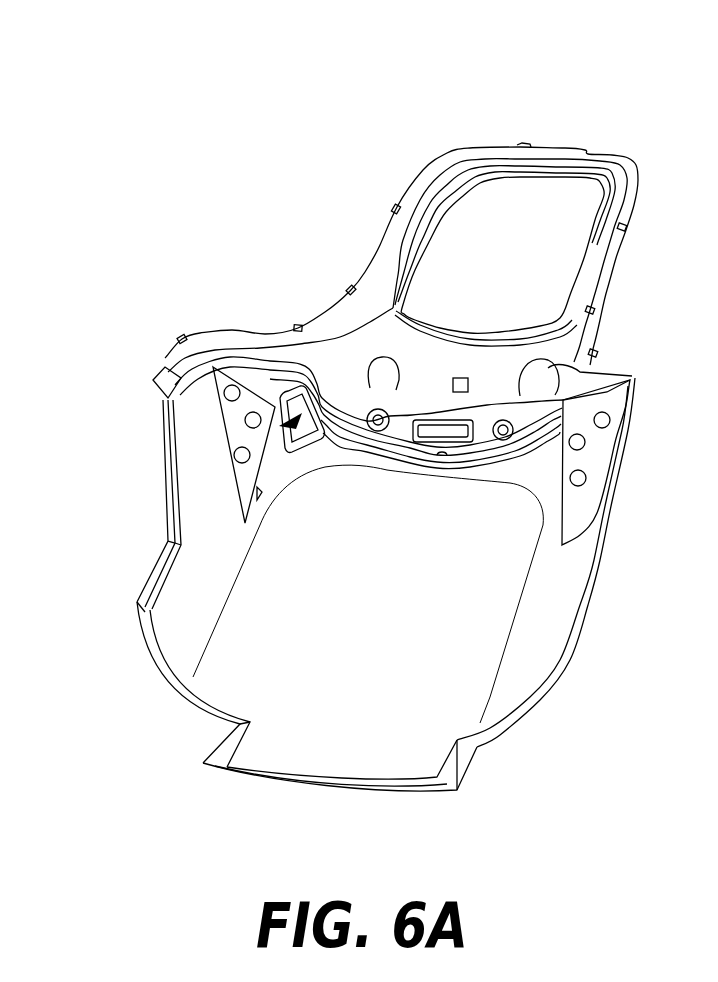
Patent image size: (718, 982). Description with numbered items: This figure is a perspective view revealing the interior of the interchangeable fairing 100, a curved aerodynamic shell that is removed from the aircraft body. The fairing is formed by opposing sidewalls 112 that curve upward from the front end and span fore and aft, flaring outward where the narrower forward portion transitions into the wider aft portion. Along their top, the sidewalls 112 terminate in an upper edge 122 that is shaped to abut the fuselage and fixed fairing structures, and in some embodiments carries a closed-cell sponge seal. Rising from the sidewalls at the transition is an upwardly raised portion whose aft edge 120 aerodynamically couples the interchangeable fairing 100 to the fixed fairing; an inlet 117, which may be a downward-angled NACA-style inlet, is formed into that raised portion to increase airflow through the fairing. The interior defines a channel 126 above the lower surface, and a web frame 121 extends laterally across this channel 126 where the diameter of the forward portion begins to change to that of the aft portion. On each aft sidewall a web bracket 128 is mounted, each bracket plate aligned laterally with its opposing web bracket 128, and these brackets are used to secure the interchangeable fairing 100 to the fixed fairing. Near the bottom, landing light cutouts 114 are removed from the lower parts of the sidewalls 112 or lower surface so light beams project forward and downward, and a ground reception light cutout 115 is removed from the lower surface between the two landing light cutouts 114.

The interchangeable fairing 100 is at (233, 175).
The sidewalls 112 is at (182, 648).
The landing light cutouts 114 is at (369, 357).
The ground reception light cutout 115 is at (460, 378).
The inlet 117 is at (290, 416).
The aft edge 120 is at (164, 450).
The web frame 121 is at (379, 410).
The upper edge 122 is at (393, 305).
The channel 126 is at (294, 752).
The web bracket 128 is at (215, 412).